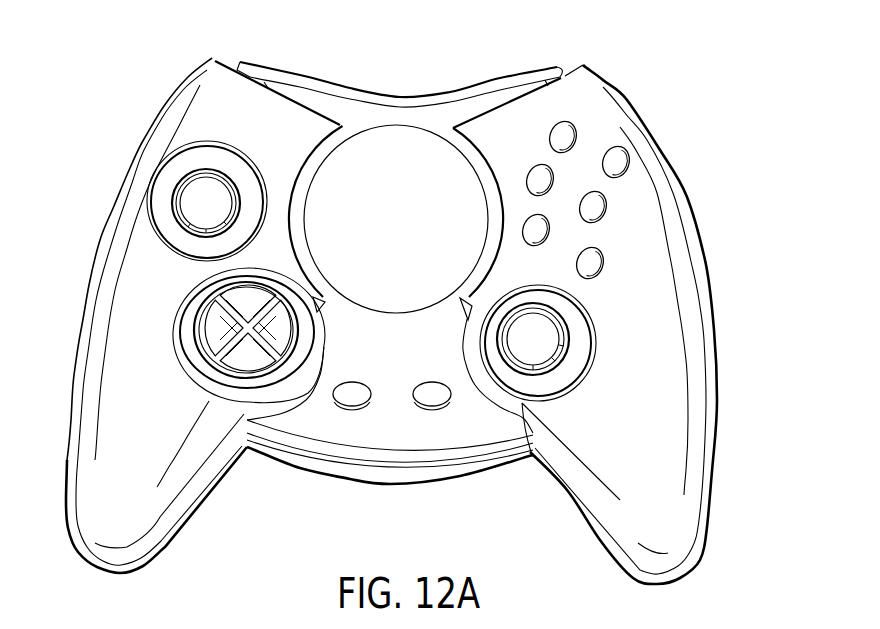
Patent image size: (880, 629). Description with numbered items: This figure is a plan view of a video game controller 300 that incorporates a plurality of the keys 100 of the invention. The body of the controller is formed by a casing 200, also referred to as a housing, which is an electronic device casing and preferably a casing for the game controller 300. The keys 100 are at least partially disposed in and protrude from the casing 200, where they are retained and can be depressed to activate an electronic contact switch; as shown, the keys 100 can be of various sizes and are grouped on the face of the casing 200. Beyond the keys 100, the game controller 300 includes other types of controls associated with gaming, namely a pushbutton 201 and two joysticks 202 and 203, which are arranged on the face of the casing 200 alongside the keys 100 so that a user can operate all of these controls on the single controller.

The game controller 300 is at (644, 40).
The casing 200 is at (700, 322).
The key 100 is at (613, 297).
The pushbutton 201 is at (207, 335).
The joystick 202 is at (177, 192).
The joystick 203 is at (540, 357).